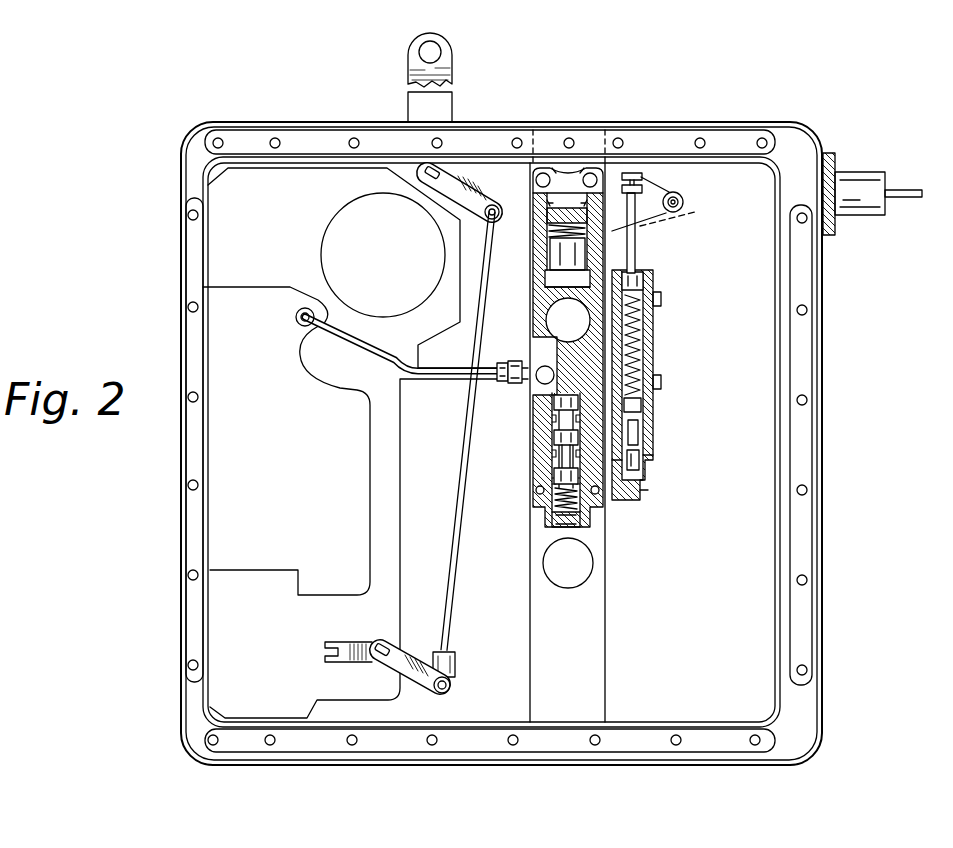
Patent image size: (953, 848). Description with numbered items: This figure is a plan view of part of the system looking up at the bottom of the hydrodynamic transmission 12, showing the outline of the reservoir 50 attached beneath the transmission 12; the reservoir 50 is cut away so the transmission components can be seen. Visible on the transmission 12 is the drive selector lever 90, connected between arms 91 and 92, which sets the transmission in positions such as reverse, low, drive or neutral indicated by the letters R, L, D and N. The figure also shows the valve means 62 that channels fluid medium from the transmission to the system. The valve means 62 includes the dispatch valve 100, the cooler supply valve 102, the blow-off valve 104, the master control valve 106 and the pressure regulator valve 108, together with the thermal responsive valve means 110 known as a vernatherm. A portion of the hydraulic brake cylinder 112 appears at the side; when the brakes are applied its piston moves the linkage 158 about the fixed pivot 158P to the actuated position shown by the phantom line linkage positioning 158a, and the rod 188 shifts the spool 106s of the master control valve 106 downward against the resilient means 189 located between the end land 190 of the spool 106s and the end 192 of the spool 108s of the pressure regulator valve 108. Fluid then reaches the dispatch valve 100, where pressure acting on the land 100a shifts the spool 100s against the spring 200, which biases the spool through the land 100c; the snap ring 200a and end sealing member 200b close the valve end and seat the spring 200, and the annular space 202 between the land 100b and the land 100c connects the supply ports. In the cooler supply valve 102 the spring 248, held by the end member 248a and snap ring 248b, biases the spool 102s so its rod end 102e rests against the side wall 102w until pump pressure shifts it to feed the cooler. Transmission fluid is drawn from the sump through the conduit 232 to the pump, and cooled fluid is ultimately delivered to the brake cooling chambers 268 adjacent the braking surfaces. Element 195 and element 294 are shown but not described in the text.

The transmission 12 is at (230, 223).
The reservoir 50 is at (825, 453).
The valve means 62 is at (636, 496).
The drive selector lever 90 is at (456, 533).
The arm 91 is at (453, 185).
The arm 92 is at (420, 655).
The dispatch valve 100 is at (555, 430).
The land 100a is at (553, 405).
The land 100b is at (553, 438).
The land 100c is at (556, 484).
The spool 100s is at (560, 458).
The cooler supply valve 102 is at (550, 254).
The spool 102s is at (548, 234).
The rod end 102e is at (548, 277).
The side wall 102w is at (548, 289).
The blow-off valve 104 is at (566, 320).
The master control valve 106 is at (655, 314).
The spool 106s is at (659, 298).
The pressure regulator valve 108 is at (652, 462).
The spool 108s is at (640, 437).
The thermal responsive valve means 110 is at (533, 362).
The hydraulic brake cylinder 112 is at (832, 158).
The linkage 158 is at (655, 190).
The fixed pivot 158P is at (685, 202).
The phantom line linkage positioning 158a is at (682, 230).
The rod 188 is at (637, 247).
The resilient means 189 is at (660, 382).
The end land 190 is at (643, 343).
The end 192 is at (642, 420).
The port 195 is at (640, 478).
The spring 200 is at (578, 518).
The snap ring 200a is at (572, 526).
The end sealing member 200b is at (566, 532).
The annular space 202 is at (554, 496).
The conduit 232 is at (556, 567).
The spring 248 is at (548, 221).
The end member 248a is at (553, 212).
The snap ring 248b is at (580, 215).
The brake cooling chamber 268 is at (652, 452).
The rod 294 is at (480, 378).